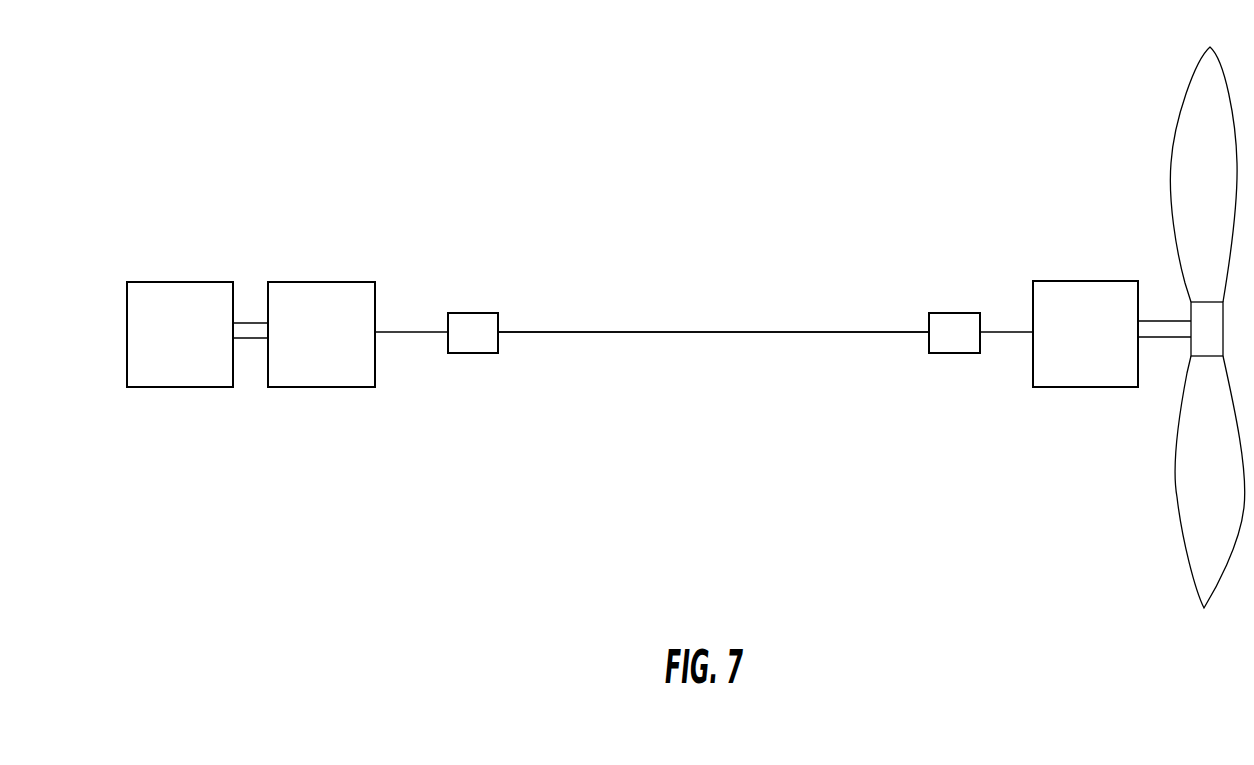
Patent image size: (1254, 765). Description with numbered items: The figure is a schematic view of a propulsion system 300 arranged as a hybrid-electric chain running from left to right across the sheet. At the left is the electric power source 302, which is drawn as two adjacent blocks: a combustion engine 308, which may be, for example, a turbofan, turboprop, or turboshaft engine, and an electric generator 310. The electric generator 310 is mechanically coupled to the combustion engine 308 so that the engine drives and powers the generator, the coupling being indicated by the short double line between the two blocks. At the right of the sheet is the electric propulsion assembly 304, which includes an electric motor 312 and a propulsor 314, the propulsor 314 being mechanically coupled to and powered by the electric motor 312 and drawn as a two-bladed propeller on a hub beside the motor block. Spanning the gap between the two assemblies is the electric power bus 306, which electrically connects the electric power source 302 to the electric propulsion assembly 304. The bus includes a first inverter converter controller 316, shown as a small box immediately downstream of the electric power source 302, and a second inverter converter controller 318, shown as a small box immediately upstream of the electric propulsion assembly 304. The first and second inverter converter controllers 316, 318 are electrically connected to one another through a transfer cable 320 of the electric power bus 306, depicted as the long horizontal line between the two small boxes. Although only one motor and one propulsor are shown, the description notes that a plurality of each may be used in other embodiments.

The propulsion system 300 is at (887, 75).
The electric power source 302 is at (285, 187).
The electric propulsion assembly 304 is at (1107, 180).
The electric power bus 306 is at (647, 243).
The combustion engine 308 is at (203, 349).
The electric generator 310 is at (342, 349).
The electric motor 312 is at (1110, 345).
The propulsor 314 is at (1168, 443).
The first inverter converter controller 316 is at (485, 313).
The second inverter converter controller 318 is at (958, 353).
The transfer cable 320 is at (688, 333).